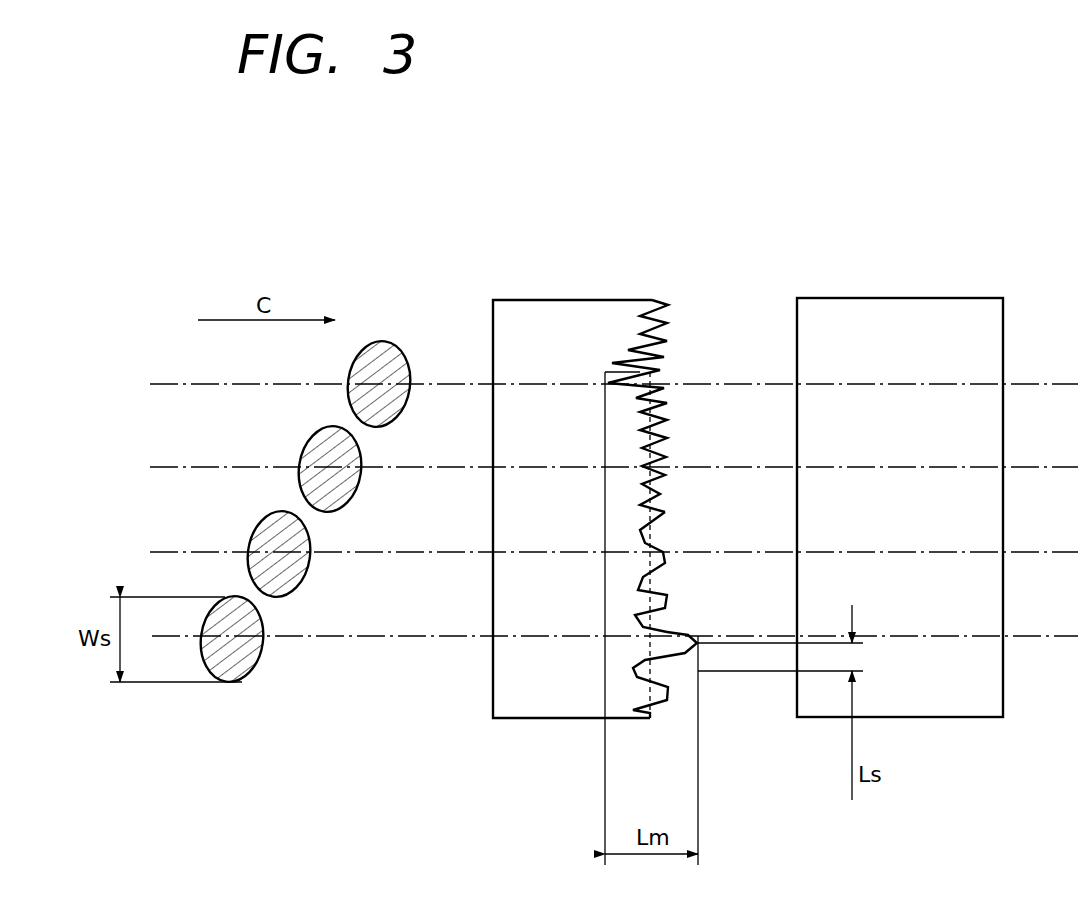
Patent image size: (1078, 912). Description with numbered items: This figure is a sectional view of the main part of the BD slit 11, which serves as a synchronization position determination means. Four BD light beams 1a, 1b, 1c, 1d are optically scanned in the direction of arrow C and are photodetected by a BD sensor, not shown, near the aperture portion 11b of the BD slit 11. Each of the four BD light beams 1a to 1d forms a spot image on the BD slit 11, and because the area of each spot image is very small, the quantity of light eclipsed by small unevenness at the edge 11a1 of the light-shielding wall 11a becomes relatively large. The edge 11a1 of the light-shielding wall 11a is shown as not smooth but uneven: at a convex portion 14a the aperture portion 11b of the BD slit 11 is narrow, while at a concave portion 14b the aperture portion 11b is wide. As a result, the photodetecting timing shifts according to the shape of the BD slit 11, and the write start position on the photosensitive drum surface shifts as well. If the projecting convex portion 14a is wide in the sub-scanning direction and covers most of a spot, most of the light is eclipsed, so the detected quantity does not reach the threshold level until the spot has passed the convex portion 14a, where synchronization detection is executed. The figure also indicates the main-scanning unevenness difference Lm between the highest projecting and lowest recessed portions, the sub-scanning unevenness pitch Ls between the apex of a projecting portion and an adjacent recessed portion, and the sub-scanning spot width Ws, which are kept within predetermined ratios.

The BD light beam 1a is at (404, 360).
The BD light beam 1b is at (357, 452).
The BD light beam 1c is at (305, 536).
The BD light beam 1d is at (258, 620).
The BD slit 11 is at (676, 160).
The light-shielding wall 11a is at (616, 476).
The edge 11a1 is at (665, 318).
The aperture portion 11b is at (726, 330).
The convex portion 14a is at (673, 645).
The concave portion 14b is at (645, 623).